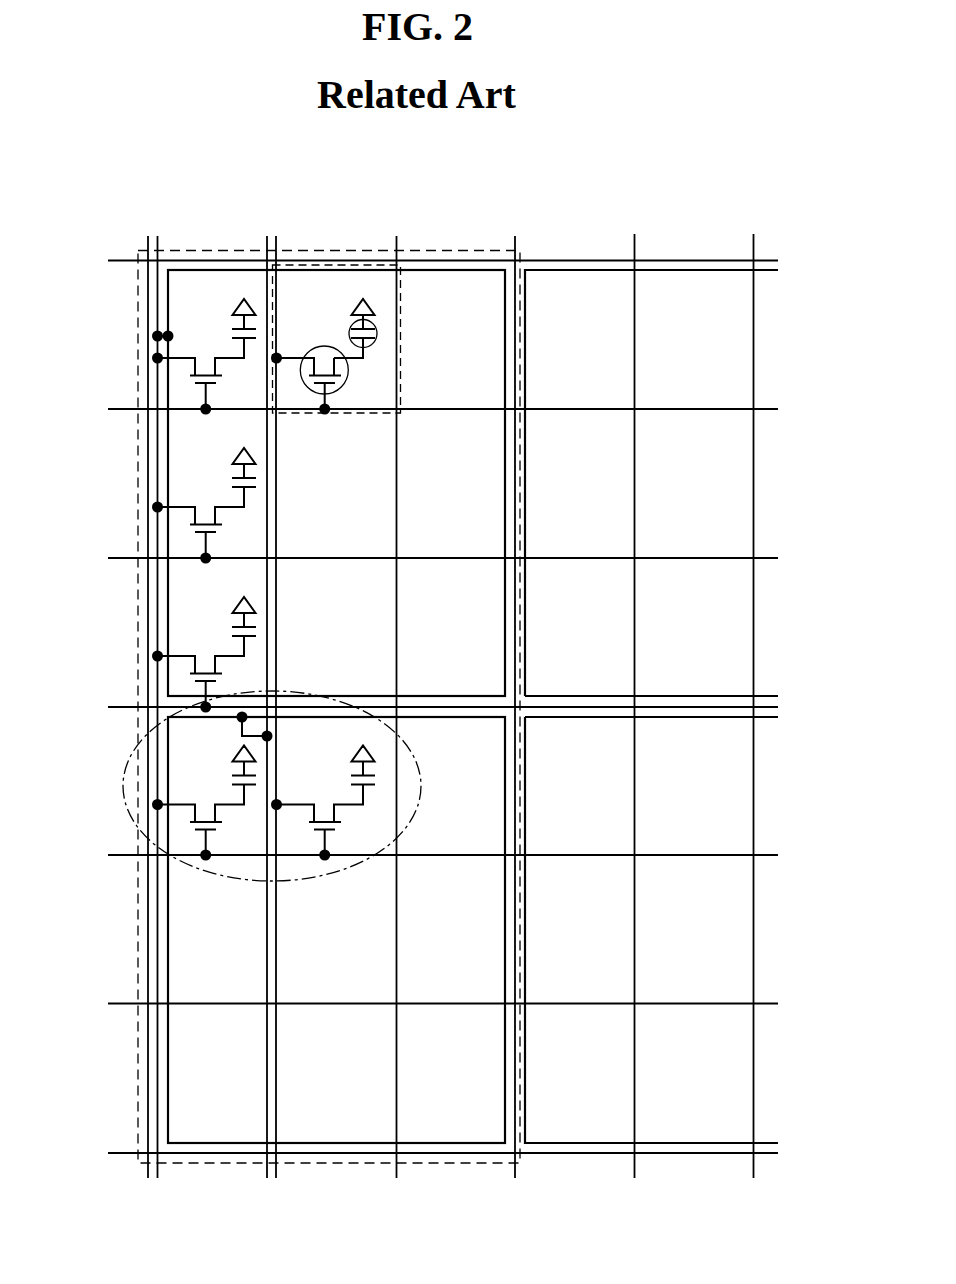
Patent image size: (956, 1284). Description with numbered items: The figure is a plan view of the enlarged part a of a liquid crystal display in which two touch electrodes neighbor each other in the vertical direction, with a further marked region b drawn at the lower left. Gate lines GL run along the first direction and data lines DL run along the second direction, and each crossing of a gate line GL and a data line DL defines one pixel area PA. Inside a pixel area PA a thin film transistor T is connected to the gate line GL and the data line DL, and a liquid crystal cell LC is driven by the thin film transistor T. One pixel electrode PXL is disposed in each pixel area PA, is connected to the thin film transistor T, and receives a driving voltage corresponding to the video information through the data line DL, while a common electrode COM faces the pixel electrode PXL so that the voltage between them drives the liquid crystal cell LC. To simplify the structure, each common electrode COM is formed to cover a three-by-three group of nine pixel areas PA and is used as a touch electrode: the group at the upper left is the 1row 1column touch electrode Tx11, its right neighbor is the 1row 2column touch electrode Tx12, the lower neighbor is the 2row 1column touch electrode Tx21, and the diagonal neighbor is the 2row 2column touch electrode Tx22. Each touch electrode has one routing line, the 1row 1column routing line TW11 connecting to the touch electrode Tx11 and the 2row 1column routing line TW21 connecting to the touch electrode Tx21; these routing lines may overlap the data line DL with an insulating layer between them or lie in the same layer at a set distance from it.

The data line DL is at (158, 237).
The gate line GL is at (117, 410).
The 1row 1column routing line TW11 is at (145, 238).
The 2row 1column routing line TW21 is at (265, 238).
The 1row 1column touch electrode Tx11 is at (167, 297).
The 1row 2column touch electrode Tx12 is at (589, 270).
The 2row 1column touch electrode Tx21 is at (167, 1040).
The 2row 2column touch electrode Tx22 is at (566, 1145).
The pixel area PA is at (363, 264).
The enlarged part a is at (329, 249).
The region b is at (123, 785).
The common electrode COM is at (353, 327).
The liquid crystal cell LC is at (378, 332).
The pixel electrode PXL is at (367, 342).
The thin film transistor T is at (347, 380).